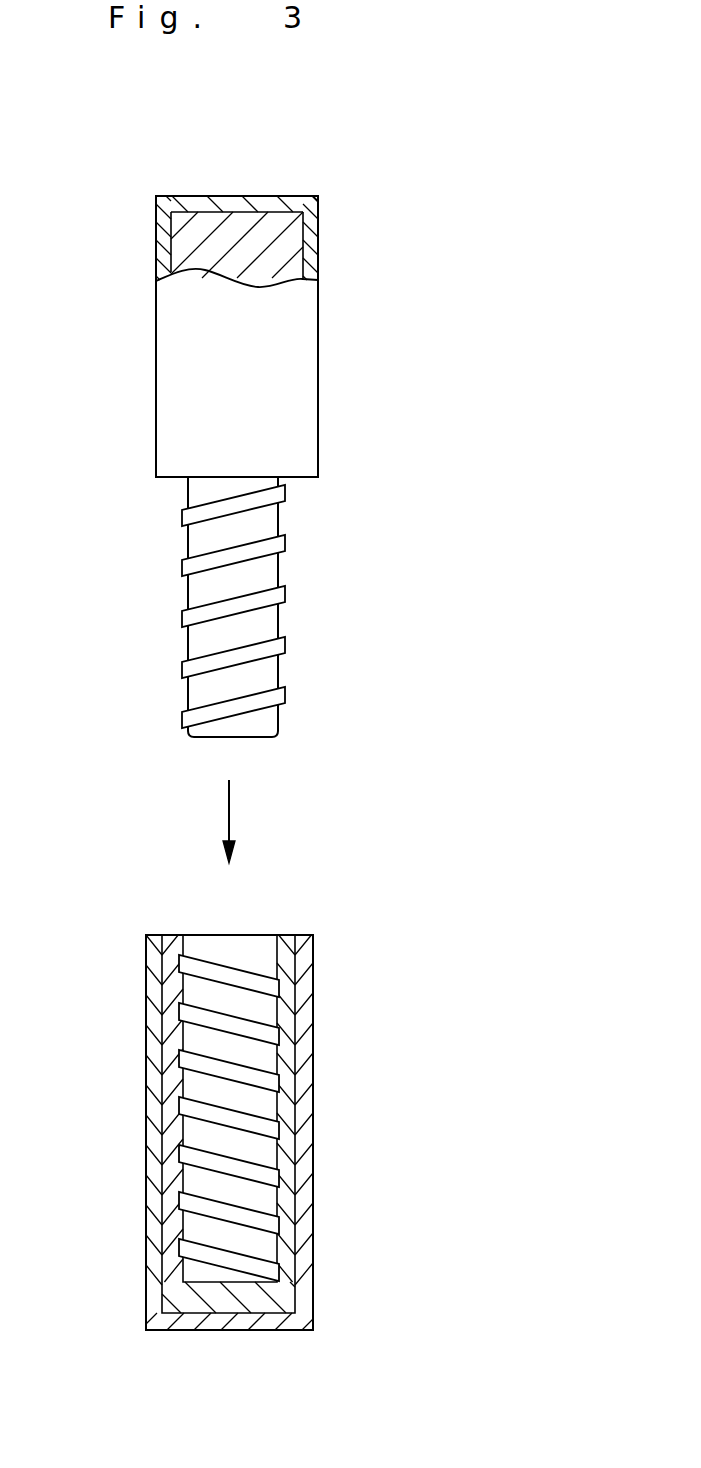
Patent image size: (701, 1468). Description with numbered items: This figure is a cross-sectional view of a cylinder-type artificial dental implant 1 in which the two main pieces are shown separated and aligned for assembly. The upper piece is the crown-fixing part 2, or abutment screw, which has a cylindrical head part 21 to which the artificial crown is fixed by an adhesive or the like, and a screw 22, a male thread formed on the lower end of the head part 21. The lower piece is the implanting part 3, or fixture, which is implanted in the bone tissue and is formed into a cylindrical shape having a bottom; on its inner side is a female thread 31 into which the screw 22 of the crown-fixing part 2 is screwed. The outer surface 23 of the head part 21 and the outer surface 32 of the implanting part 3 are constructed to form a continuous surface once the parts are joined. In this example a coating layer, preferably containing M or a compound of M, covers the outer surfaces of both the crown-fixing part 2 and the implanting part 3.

The artificial dental implant 1 is at (513, 243).
The crown-fixing part 2 is at (333, 323).
The implanting part 3 is at (340, 1023).
The head part 21 is at (196, 307).
The screw 22 is at (197, 565).
The outer surface 23 is at (318, 413).
The female thread 31 is at (237, 978).
The outer surface 32 is at (313, 1118).